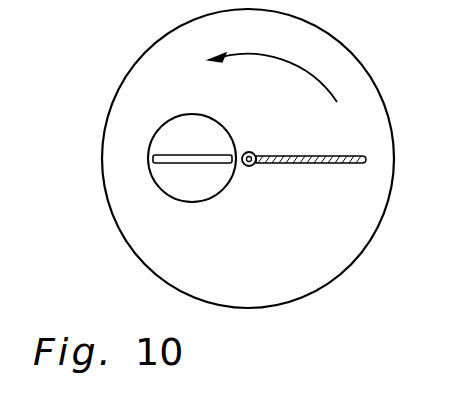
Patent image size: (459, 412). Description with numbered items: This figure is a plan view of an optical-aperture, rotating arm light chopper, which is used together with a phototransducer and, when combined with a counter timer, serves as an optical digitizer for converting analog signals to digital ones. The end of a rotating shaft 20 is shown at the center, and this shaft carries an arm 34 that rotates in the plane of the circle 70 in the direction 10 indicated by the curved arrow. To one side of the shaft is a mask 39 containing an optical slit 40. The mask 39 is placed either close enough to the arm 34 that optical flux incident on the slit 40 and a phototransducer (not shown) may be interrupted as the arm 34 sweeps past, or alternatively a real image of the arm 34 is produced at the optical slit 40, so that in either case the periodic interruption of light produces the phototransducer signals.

The circle 70 is at (148, 47).
The direction 10 is at (292, 61).
The mask 39 is at (172, 120).
The optical slit 40 is at (180, 160).
The rotating shaft 20 is at (252, 166).
The arm 34 is at (328, 164).